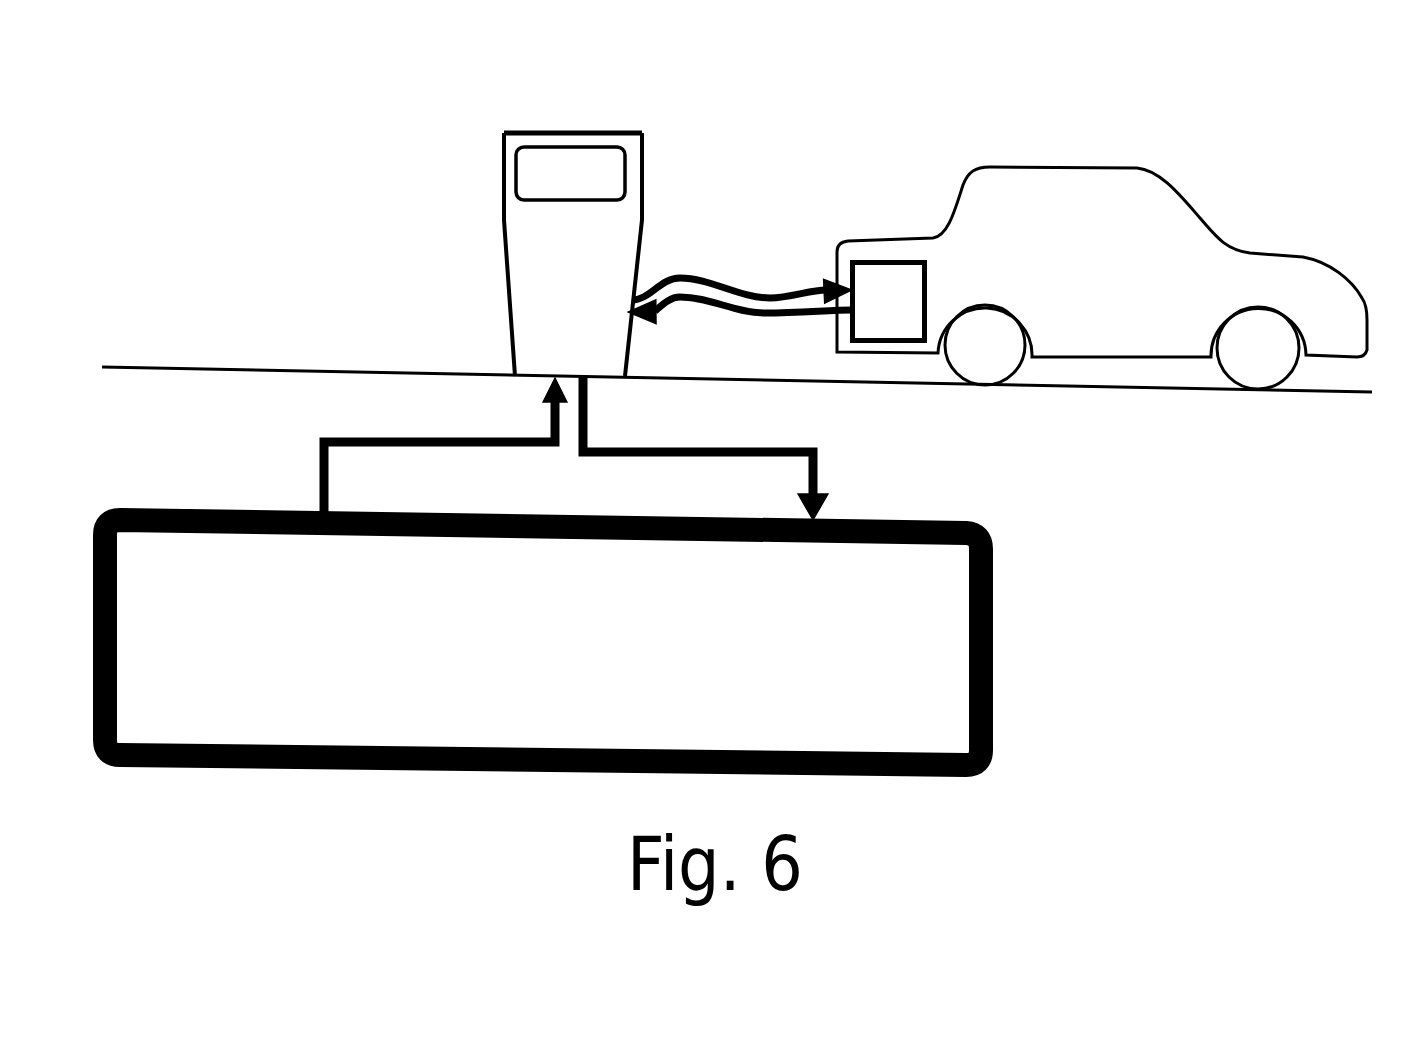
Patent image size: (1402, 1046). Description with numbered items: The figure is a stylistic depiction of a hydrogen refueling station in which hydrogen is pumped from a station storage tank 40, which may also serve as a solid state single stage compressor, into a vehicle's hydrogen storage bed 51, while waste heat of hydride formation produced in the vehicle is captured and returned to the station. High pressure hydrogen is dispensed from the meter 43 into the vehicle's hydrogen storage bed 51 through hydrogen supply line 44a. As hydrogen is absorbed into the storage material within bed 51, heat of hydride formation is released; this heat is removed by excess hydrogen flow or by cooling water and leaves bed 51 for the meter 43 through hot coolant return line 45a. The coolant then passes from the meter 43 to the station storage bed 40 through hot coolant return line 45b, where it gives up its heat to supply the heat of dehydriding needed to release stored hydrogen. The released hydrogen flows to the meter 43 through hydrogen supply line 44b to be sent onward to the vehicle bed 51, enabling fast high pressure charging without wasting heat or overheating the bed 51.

The station storage tank 40 is at (1014, 593).
The meter 43 is at (528, 113).
The hydrogen supply line 44a is at (702, 239).
The hydrogen supply line 44b is at (300, 442).
The hot coolant return line 45a is at (693, 337).
The hot coolant return line 45b is at (847, 453).
The vehicle hydrogen storage bed 51 is at (885, 236).